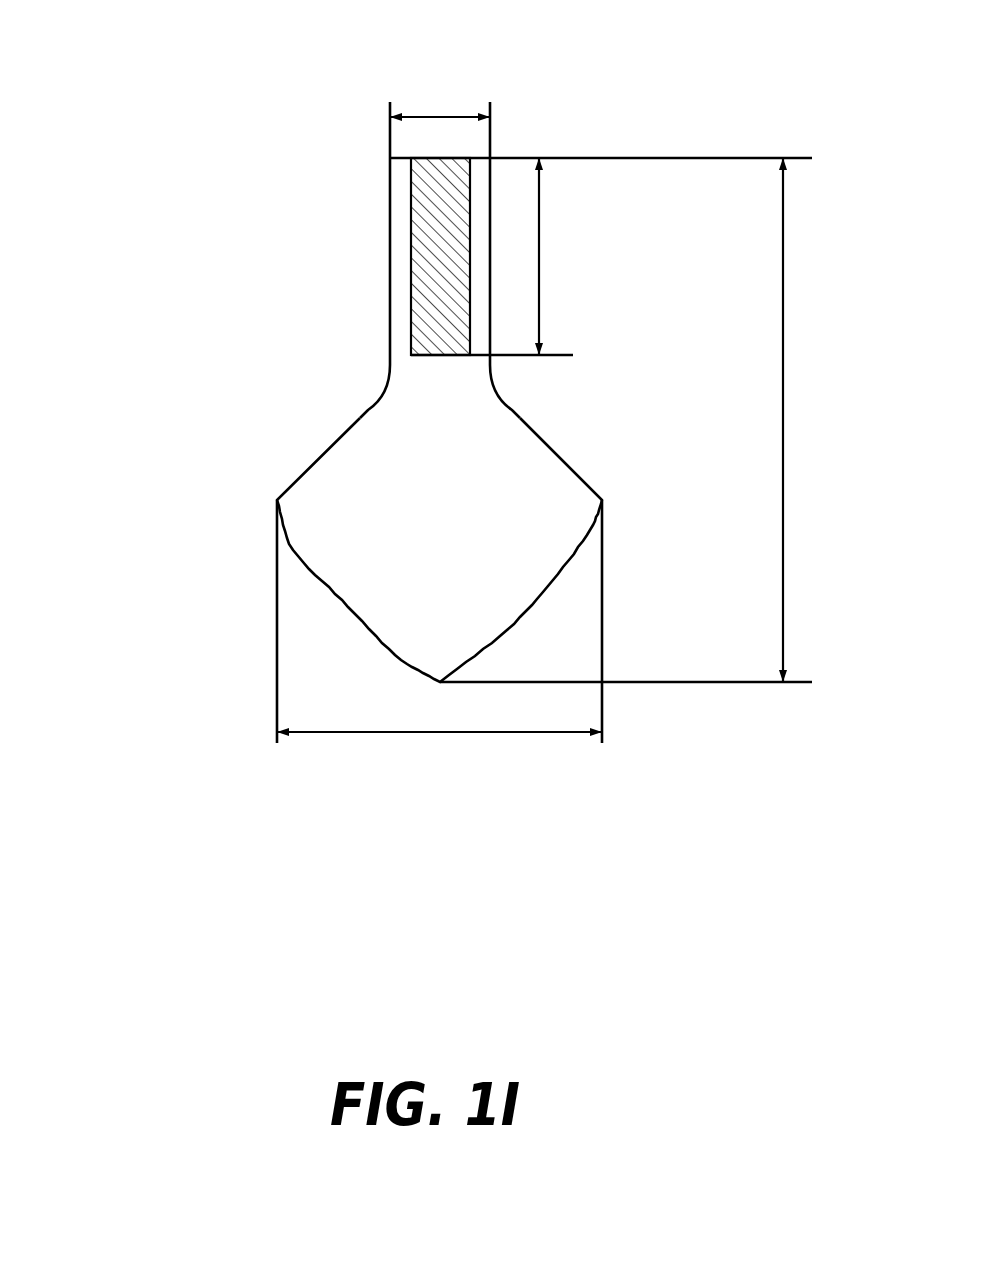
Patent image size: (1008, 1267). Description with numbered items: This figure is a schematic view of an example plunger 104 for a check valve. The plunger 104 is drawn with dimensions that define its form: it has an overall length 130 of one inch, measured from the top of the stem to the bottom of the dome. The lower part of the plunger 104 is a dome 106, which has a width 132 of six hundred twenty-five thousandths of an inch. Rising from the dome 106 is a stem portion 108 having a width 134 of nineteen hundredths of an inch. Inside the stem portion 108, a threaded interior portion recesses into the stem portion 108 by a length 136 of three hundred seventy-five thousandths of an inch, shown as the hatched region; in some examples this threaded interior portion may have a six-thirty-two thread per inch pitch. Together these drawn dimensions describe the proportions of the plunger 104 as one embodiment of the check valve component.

The plunger 104 is at (322, 422).
The dome 106 is at (323, 537).
The stem portion 108 is at (389, 252).
The overall length 130 is at (783, 350).
The width 132 is at (510, 733).
The width 134 is at (450, 117).
The length 136 is at (539, 312).